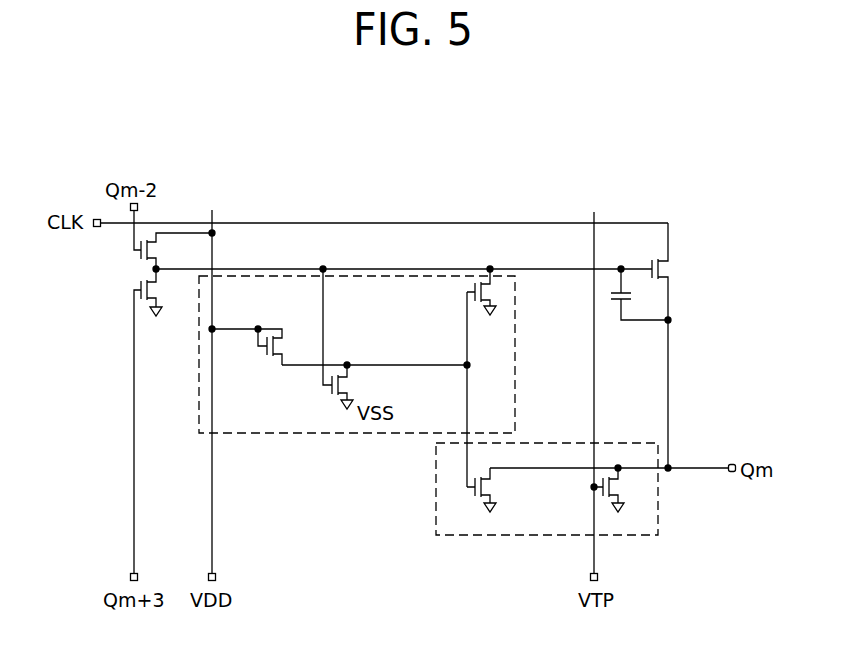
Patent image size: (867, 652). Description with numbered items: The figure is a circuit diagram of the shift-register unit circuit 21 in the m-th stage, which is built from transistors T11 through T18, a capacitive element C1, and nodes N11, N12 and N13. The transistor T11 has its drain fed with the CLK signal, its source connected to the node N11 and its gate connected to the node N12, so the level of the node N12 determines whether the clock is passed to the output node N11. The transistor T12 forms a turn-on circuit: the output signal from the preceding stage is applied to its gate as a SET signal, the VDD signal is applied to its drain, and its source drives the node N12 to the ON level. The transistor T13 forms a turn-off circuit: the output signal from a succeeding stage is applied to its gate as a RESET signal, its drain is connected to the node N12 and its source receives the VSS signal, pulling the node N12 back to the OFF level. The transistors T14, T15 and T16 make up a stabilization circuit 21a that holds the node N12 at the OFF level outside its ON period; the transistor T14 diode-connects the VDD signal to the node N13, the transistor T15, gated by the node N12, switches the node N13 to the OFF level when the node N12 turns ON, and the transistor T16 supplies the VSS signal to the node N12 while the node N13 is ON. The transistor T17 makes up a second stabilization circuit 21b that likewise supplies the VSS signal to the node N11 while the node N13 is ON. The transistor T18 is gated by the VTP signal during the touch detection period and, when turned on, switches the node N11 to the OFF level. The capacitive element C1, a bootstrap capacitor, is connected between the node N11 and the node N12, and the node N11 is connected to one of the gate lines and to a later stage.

The shift-register unit circuit 21 is at (193, 151).
The stabilization circuit 21a is at (542, 305).
The stabilization circuit 21b is at (613, 443).
The transistor T11 is at (670, 267).
The transistor T12 is at (136, 262).
The transistor T13 is at (137, 282).
The transistor T14 is at (272, 366).
The transistor T15 is at (328, 388).
The transistor T16 is at (479, 306).
The transistor T17 is at (475, 498).
The transistor T18 is at (605, 499).
The capacitive element C1 is at (618, 308).
The node N11 is at (673, 459).
The node N12 is at (486, 267).
The node N13 is at (400, 362).